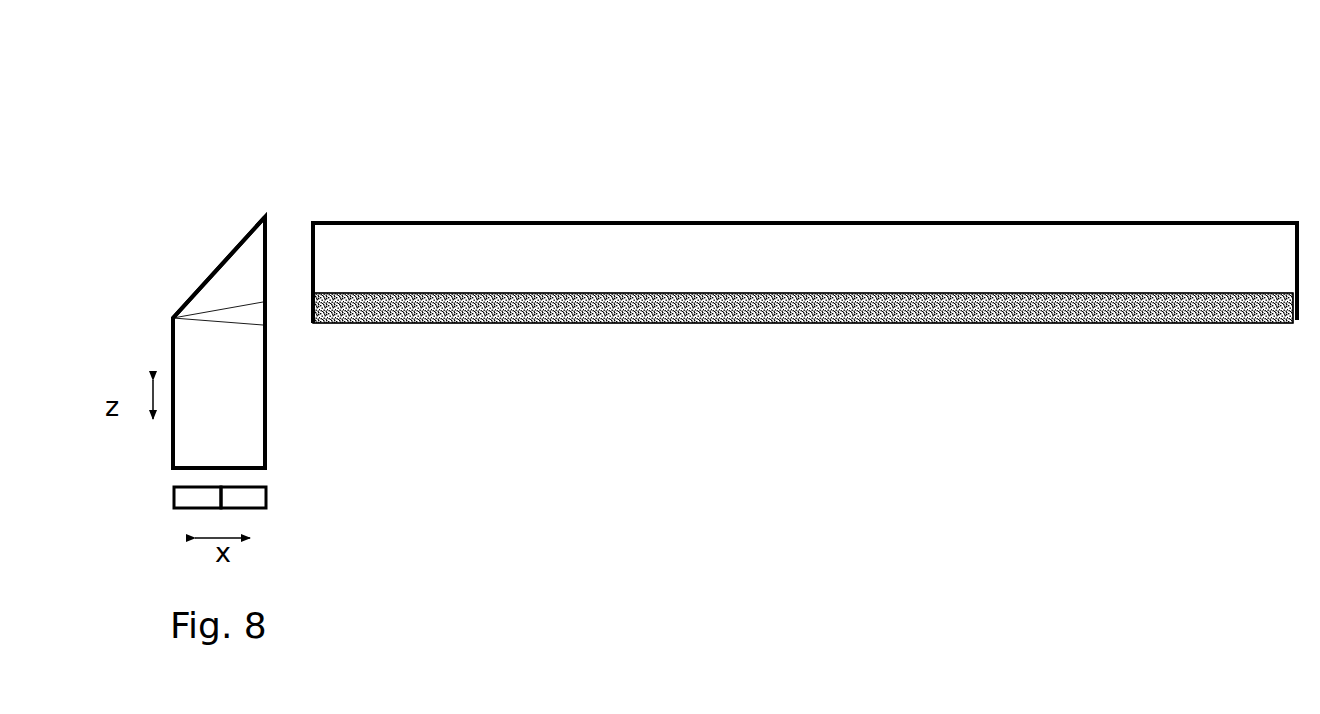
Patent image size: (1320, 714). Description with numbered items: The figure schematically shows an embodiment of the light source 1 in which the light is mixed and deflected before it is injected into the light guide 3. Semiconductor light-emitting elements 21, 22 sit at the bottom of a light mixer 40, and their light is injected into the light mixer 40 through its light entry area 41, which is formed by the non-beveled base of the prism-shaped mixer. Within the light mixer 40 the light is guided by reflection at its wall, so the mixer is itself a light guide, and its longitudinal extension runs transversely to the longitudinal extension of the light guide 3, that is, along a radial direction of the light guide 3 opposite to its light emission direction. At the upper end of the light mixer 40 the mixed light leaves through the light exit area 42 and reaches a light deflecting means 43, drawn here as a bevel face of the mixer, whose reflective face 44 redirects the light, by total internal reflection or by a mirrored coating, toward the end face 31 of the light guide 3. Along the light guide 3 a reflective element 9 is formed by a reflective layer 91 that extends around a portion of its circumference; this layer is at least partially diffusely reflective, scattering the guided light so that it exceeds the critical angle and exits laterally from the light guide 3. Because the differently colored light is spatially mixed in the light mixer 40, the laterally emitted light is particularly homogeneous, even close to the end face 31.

The light source 1 is at (619, 79).
The light guide 3 is at (783, 222).
The end face 31 is at (313, 249).
The reflective element 9 is at (458, 312).
The reflective layer 91 is at (803, 308).
The light mixer 40 is at (265, 395).
The light entry area 41 is at (228, 468).
The light exit area 42 is at (265, 282).
The light deflecting means 43 is at (212, 238).
The reflective face 44 is at (193, 293).
The semiconductor light-emitting element 21 is at (260, 500).
The semiconductor light-emitting element 22 is at (187, 500).